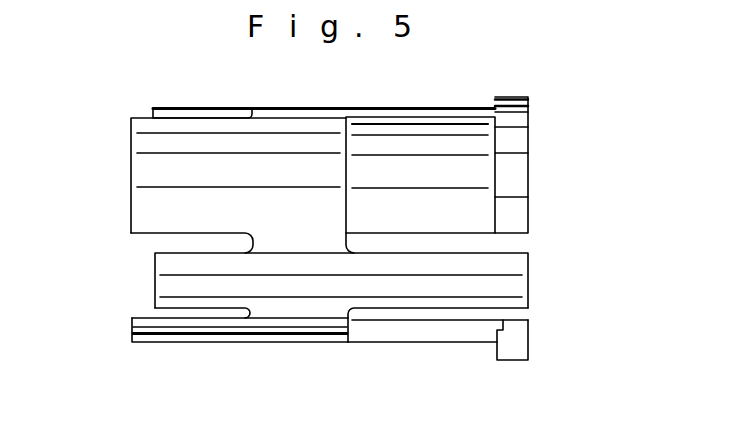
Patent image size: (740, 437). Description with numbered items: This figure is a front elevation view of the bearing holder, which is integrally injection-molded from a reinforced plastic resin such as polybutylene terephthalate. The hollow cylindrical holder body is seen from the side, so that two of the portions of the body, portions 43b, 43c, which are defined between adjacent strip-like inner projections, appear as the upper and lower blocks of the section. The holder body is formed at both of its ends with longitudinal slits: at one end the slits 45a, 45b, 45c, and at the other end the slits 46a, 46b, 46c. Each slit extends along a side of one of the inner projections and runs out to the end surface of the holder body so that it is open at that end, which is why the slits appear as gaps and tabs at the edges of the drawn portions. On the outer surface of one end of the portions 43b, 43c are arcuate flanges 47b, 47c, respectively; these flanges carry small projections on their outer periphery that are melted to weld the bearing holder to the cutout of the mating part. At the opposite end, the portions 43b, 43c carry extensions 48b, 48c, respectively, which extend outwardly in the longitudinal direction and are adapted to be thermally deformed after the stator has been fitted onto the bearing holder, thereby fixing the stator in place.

The portion of the cylindrical holder body 43b is at (418, 145).
The portion of the cylindrical holder body 43c is at (428, 335).
The slit 45a is at (476, 113).
The slit 45b is at (515, 245).
The slit 45c is at (522, 313).
The slit 46a is at (172, 112).
The slit 46b is at (147, 245).
The slit 46c is at (147, 317).
The arcuate flange 47b is at (515, 152).
The arcuate flange 47c is at (518, 360).
The extension 48b is at (140, 148).
The extension 48c is at (140, 342).